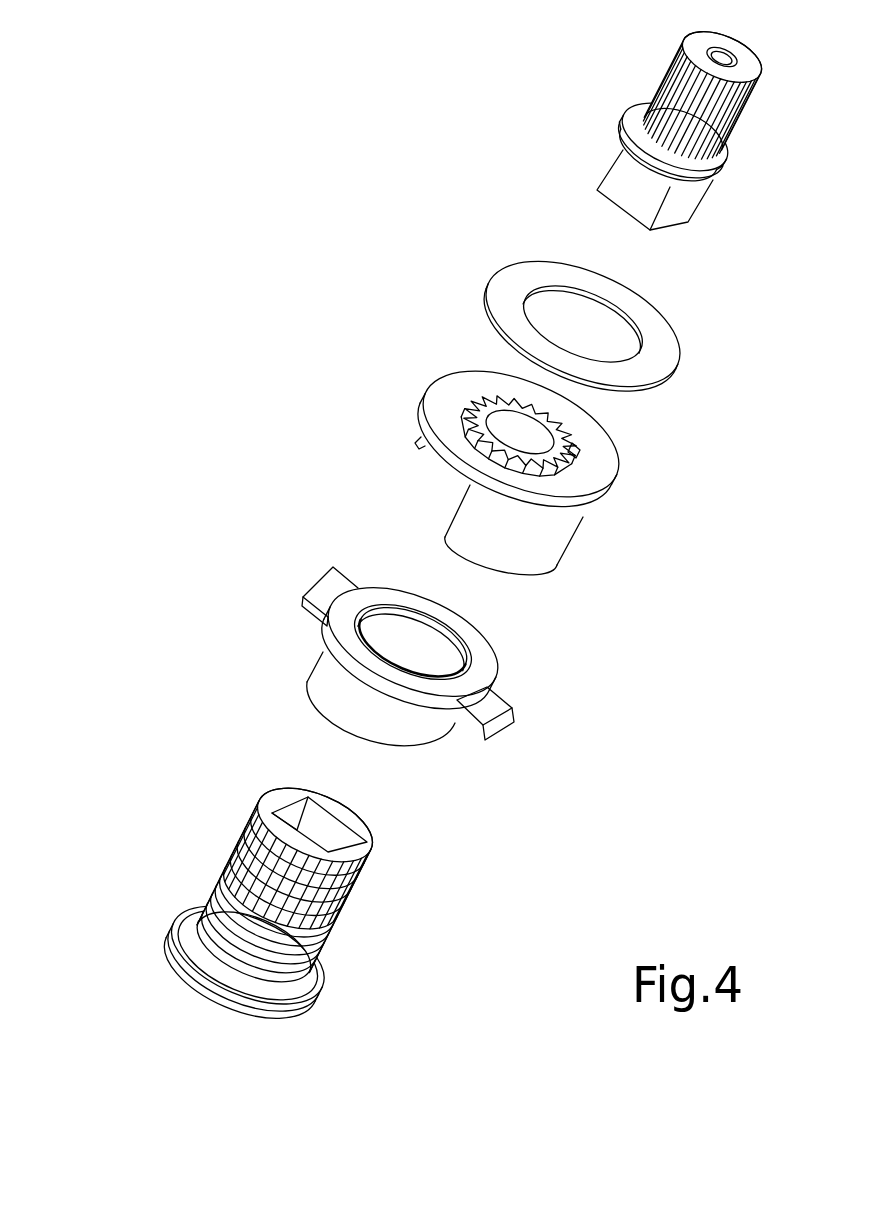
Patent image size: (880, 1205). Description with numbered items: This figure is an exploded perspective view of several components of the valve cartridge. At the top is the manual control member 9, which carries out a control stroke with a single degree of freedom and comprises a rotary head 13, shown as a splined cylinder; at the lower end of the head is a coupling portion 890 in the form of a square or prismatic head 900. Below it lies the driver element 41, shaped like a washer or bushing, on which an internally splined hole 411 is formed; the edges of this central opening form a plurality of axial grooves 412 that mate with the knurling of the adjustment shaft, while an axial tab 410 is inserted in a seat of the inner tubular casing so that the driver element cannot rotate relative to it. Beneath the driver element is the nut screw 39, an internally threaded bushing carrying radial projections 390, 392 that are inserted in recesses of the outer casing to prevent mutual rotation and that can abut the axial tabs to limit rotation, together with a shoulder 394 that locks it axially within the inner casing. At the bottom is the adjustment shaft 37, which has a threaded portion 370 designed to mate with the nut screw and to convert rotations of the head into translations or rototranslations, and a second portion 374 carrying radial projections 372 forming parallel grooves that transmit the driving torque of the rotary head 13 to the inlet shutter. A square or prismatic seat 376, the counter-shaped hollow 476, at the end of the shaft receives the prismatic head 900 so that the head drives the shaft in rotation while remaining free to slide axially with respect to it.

The manual control member 9 is at (752, 160).
The rotary head 13 is at (672, 64).
The coupling portion 890 is at (623, 177).
The square or prismatic head 900 is at (655, 190).
The driver element 41 is at (612, 548).
The internally splined hole 411 is at (486, 402).
The axial grooves 412 is at (422, 444).
The axial tab 410 is at (537, 548).
The nut screw 39 is at (300, 626).
The radial projection 390 is at (320, 592).
The radial projection 392 is at (498, 702).
The shoulder 394 is at (343, 647).
The adjustment shaft 37 is at (366, 988).
The threaded portion 370 is at (148, 733).
The second portion 374 is at (215, 767).
The radial projections 372 is at (322, 877).
The square or prismatic seat 376 is at (328, 830).
The counter-shaped hollow 476 is at (319, 824).